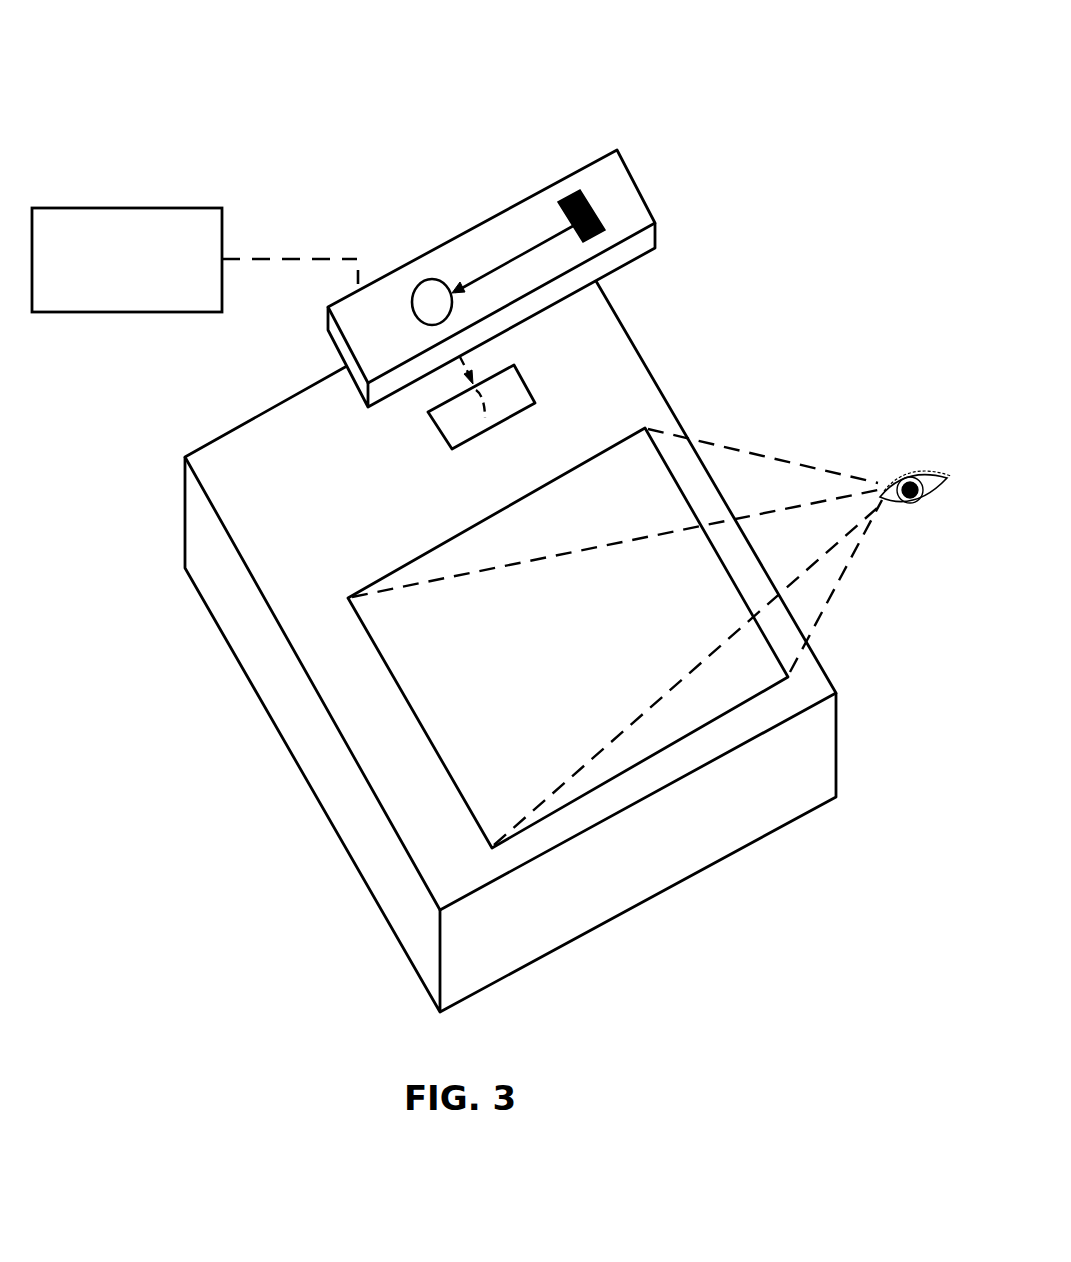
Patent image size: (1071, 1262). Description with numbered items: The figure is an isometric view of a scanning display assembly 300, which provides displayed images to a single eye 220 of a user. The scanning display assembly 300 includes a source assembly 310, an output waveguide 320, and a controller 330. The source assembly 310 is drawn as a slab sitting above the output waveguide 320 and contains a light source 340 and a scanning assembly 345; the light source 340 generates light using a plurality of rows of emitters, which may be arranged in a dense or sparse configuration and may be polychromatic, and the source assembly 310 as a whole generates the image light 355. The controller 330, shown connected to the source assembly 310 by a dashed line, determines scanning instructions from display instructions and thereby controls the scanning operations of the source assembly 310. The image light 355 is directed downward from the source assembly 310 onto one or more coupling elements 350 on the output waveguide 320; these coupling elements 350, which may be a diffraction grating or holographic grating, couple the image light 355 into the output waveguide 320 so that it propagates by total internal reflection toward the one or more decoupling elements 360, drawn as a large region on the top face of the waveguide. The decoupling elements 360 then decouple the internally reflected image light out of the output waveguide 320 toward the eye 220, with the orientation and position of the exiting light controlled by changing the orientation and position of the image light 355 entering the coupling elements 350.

The scanning display assembly 300 is at (83, 31).
The source assembly 310 is at (645, 204).
The output waveguide 320 is at (358, 762).
The controller 330 is at (106, 287).
The light source 340 is at (578, 190).
The scanning assembly 345 is at (432, 303).
The coupling elements 350 is at (535, 403).
The image light 355 is at (517, 378).
The decoupling elements 360 is at (478, 833).
The eye 220 is at (900, 461).